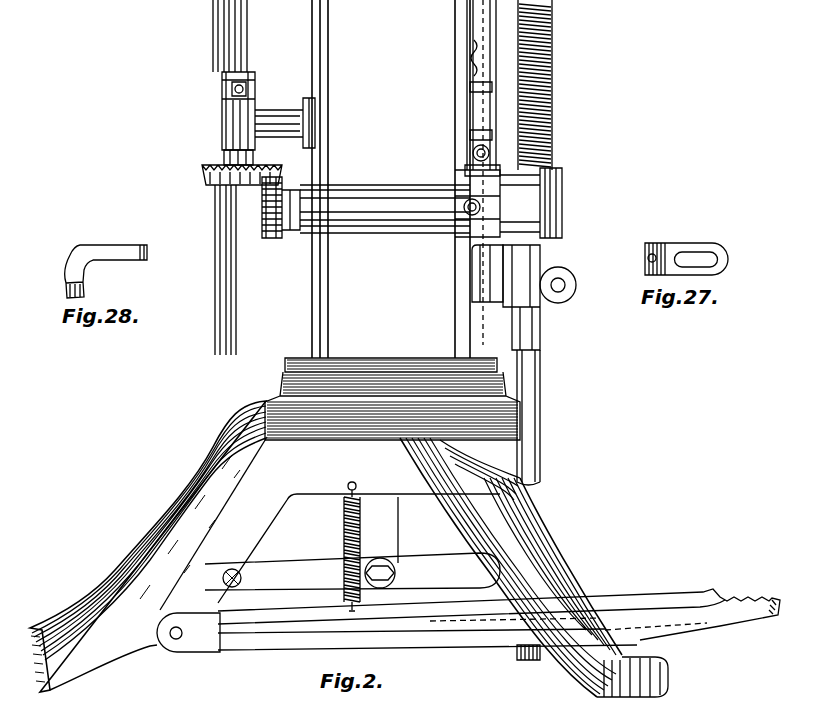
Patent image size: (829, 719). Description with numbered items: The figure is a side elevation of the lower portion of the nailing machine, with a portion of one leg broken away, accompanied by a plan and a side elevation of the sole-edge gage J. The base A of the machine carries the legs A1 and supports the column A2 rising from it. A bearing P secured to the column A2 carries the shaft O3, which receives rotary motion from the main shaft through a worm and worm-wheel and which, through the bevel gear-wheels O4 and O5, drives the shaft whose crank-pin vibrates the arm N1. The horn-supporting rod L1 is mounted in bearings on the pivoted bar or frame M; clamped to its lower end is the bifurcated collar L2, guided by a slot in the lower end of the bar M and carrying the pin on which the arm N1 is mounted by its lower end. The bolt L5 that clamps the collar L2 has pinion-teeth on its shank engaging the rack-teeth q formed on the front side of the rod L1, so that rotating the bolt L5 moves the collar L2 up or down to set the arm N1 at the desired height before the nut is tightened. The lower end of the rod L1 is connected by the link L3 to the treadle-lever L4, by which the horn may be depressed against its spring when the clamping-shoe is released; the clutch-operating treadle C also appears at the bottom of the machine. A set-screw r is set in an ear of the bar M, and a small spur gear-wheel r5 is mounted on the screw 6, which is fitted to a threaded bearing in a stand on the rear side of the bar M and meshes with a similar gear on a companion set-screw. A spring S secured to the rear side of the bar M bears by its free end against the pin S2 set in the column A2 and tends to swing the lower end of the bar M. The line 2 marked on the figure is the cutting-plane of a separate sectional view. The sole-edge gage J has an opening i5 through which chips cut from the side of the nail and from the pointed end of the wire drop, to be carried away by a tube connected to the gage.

In FIG. 2, the column A2 is at (370, 126).
In FIG. 2, the bearing P is at (220, 126).
In FIG. 2, the shaft O3 is at (247, 47).
In FIG. 2, the bevel gear-wheel O4 is at (242, 183).
In FIG. 2, the bevel gear-wheel O5 is at (366, 219).
In FIG. 2, the spring S is at (492, 88).
In FIG. 2, the pivoted bar or frame M is at (505, 119).
In FIG. 2, the pin S2 is at (492, 136).
In FIG. 2, the screw 6 is at (511, 147).
In FIG. 2, the set-screw r is at (489, 155).
In FIG. 2, the spur gear-wheel r5 is at (490, 165).
In FIG. 2, the supporting-rod L1 is at (535, 92).
In FIG. 2, the arm N1 is at (480, 262).
In FIG. 2, the bifurcated collar L2 is at (521, 297).
In FIG. 2, the rack-teeth q is at (545, 275).
In FIG. 2, the bolt L5 is at (560, 285).
In FIG. 2, the section line 2 is at (486, 329).
In FIG. 2, the base A is at (285, 388).
In FIG. 2, the link L3 is at (540, 392).
In FIG. 2, the legs A1 is at (180, 560).
In FIG. 2, the treadle-lever L4 is at (634, 600).
In FIG. 2, the clutch-operating treadle C is at (622, 656).
In FIG. 28, the sole-edge gage J is at (106, 263).
In FIG. 27, the sole-edge gage J is at (676, 252).
In FIG. 27, the opening i5 is at (648, 259).